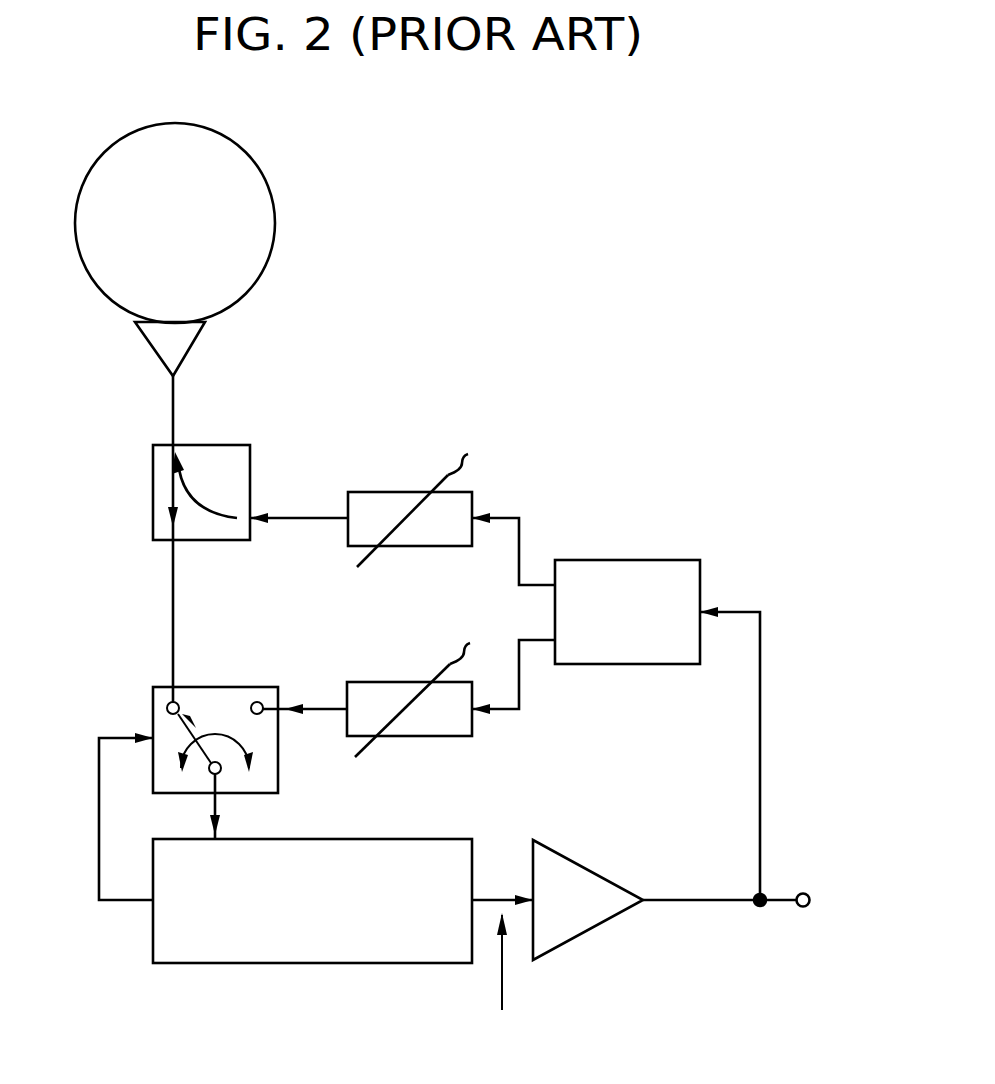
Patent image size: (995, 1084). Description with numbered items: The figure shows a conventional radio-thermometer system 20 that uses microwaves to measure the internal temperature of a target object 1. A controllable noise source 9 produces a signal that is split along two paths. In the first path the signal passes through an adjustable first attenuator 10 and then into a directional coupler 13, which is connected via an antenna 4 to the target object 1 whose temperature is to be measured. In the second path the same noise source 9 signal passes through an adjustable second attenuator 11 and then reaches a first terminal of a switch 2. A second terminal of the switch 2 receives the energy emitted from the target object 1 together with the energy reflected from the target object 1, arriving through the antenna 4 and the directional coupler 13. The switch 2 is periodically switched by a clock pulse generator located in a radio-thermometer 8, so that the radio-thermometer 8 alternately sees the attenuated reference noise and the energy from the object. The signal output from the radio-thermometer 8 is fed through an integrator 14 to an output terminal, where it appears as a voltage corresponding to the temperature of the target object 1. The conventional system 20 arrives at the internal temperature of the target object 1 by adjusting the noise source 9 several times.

The target object 1 is at (185, 261).
The switch 2 is at (218, 687).
The antenna 4 is at (192, 343).
The radio-thermometer 8 is at (415, 839).
The noise source 9 is at (655, 560).
The first attenuator 10 is at (409, 492).
The second attenuator 11 is at (409, 682).
The directional coupler 13 is at (203, 445).
The integrator 14 is at (595, 868).
The radio-thermometer system 20 is at (622, 263).